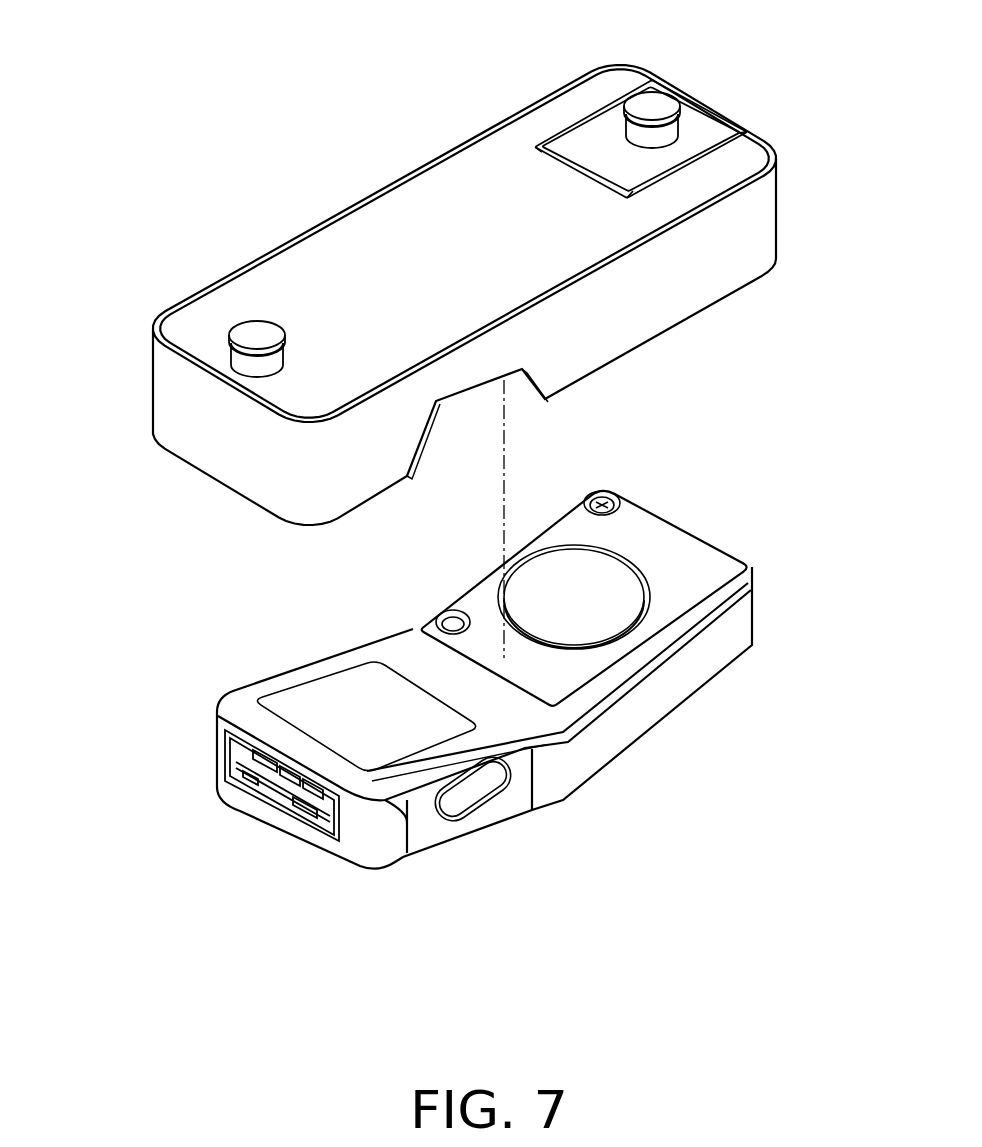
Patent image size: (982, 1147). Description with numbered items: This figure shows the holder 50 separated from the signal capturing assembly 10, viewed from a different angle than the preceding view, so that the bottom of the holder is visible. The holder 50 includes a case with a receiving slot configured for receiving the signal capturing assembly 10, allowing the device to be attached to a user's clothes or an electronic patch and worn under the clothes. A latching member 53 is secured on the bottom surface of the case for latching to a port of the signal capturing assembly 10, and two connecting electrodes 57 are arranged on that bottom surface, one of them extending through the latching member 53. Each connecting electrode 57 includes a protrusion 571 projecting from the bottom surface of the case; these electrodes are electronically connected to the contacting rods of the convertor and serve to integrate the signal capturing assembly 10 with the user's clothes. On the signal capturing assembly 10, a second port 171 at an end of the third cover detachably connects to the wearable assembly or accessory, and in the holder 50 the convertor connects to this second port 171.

The signal capturing assembly 10 is at (600, 737).
The holder 50 is at (152, 373).
The latching member 53 is at (707, 122).
The connecting electrodes 57 is at (242, 367).
The protrusion 571 is at (262, 335).
The second port 171 is at (282, 785).